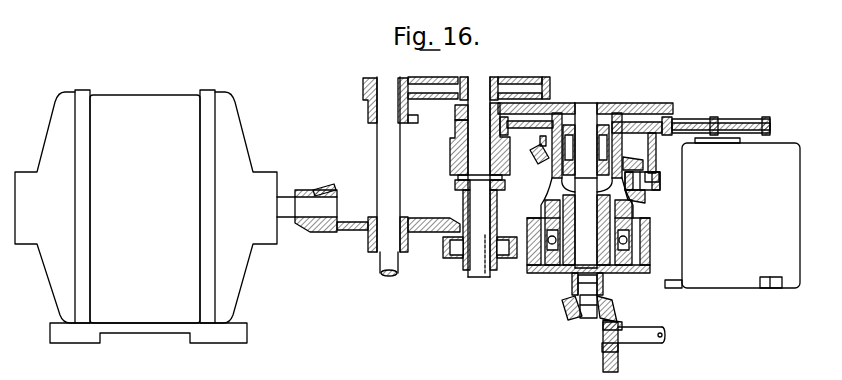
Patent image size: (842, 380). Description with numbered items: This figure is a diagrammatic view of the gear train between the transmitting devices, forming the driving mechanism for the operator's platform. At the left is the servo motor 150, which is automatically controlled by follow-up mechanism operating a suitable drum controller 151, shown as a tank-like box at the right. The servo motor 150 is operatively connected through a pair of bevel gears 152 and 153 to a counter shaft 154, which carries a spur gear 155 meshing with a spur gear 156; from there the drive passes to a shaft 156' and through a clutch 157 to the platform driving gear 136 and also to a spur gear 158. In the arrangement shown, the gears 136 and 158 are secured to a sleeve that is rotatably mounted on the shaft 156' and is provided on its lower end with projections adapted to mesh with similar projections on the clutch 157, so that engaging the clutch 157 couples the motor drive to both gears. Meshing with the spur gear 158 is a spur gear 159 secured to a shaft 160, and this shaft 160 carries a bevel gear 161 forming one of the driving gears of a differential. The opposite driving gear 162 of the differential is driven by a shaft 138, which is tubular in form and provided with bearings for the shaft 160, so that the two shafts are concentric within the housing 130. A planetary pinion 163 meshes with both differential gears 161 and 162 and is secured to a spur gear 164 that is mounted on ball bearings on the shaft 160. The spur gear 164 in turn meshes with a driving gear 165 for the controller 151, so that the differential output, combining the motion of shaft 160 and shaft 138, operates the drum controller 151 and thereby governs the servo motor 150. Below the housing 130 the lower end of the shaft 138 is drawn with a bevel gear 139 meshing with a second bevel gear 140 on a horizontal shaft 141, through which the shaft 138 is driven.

The bearing housing 130 is at (528, 266).
The platform driving gear 136 is at (450, 153).
The shaft 138 is at (572, 286).
The bevel gear 139 is at (578, 311).
The bevel gear 140 is at (604, 358).
The horizontal shaft 141 is at (652, 340).
The servo motor 150 is at (147, 100).
The drum controller 151 is at (732, 213).
The bevel gear 152 is at (321, 185).
The bevel gear 153 is at (337, 233).
The counter shaft 154 is at (385, 167).
The spur gear 155 is at (372, 80).
The spur gear 156 is at (479, 165).
The shaft 156' is at (445, 263).
The clutch 157 is at (497, 216).
The spur gear 158 is at (456, 108).
The spur gear 159 is at (557, 110).
The shaft 160 is at (587, 105).
The bevel gear 161 is at (543, 160).
The driving gear 162 is at (494, 237).
The planetary pinion 163 is at (641, 201).
The spur gear 164 is at (651, 144).
The driving gear 165 is at (750, 121).